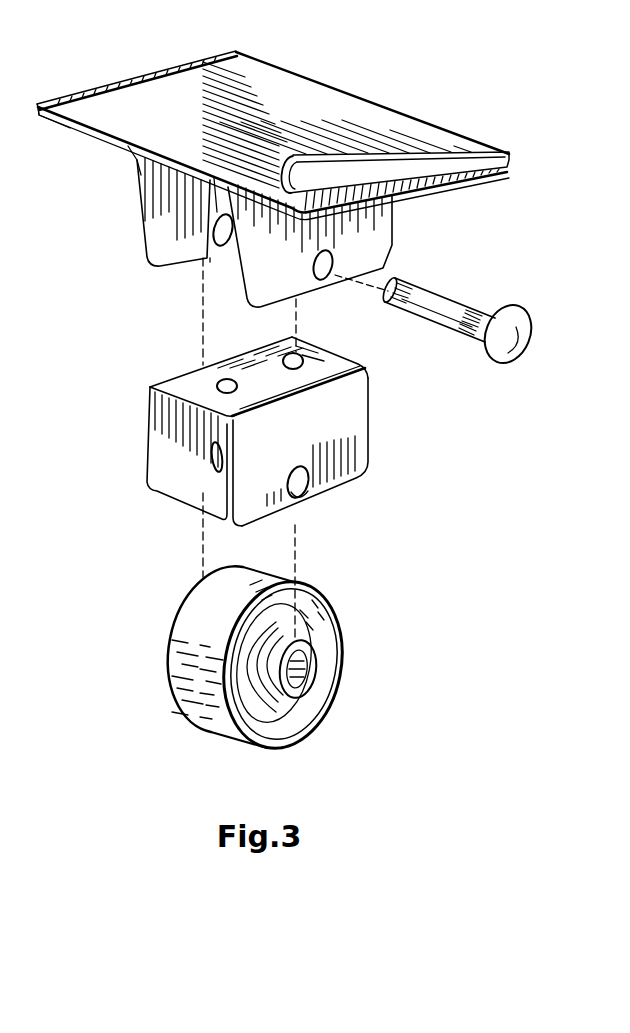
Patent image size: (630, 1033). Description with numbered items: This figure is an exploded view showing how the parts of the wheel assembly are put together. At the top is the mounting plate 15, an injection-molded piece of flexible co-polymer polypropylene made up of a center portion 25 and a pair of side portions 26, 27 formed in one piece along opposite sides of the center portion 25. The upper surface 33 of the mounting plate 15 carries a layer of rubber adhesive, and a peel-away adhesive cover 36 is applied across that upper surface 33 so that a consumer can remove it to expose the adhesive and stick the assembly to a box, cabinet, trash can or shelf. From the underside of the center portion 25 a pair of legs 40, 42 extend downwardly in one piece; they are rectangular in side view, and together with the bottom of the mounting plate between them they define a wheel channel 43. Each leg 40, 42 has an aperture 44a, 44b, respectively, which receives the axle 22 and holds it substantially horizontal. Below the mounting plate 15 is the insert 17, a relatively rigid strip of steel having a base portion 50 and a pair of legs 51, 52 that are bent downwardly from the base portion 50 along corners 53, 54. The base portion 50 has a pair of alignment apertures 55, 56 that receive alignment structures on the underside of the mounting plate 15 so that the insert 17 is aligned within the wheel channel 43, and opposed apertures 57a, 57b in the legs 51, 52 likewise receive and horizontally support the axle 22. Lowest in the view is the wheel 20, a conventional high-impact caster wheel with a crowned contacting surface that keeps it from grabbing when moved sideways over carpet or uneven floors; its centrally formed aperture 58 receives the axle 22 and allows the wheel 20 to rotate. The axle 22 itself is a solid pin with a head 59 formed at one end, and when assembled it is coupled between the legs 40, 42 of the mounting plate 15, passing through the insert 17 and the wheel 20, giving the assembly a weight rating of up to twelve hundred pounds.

The mounting plate 15 is at (520, 179).
The peel-away adhesive cover 36 is at (128, 108).
The side portion 26 is at (72, 132).
The center portion 25 is at (143, 190).
The side portion 27 is at (512, 168).
The upper surface 33 is at (408, 184).
The leg 40 is at (145, 247).
The leg 42 is at (393, 241).
The wheel channel 43 is at (185, 279).
The aperture 44a is at (223, 247).
The aperture 44b is at (336, 272).
The axle 22 is at (497, 299).
The head 59 is at (518, 356).
The insert 17 is at (410, 441).
The base portion 50 is at (370, 386).
The leg 51 is at (165, 474).
The leg 52 is at (370, 465).
The corner 53 is at (148, 389).
The corner 54 is at (273, 402).
The alignment aperture 55 is at (216, 386).
The alignment aperture 56 is at (299, 356).
The aperture 57a is at (217, 458).
The aperture 57b is at (312, 497).
The wheel 20 is at (347, 661).
The aperture 58 is at (298, 687).